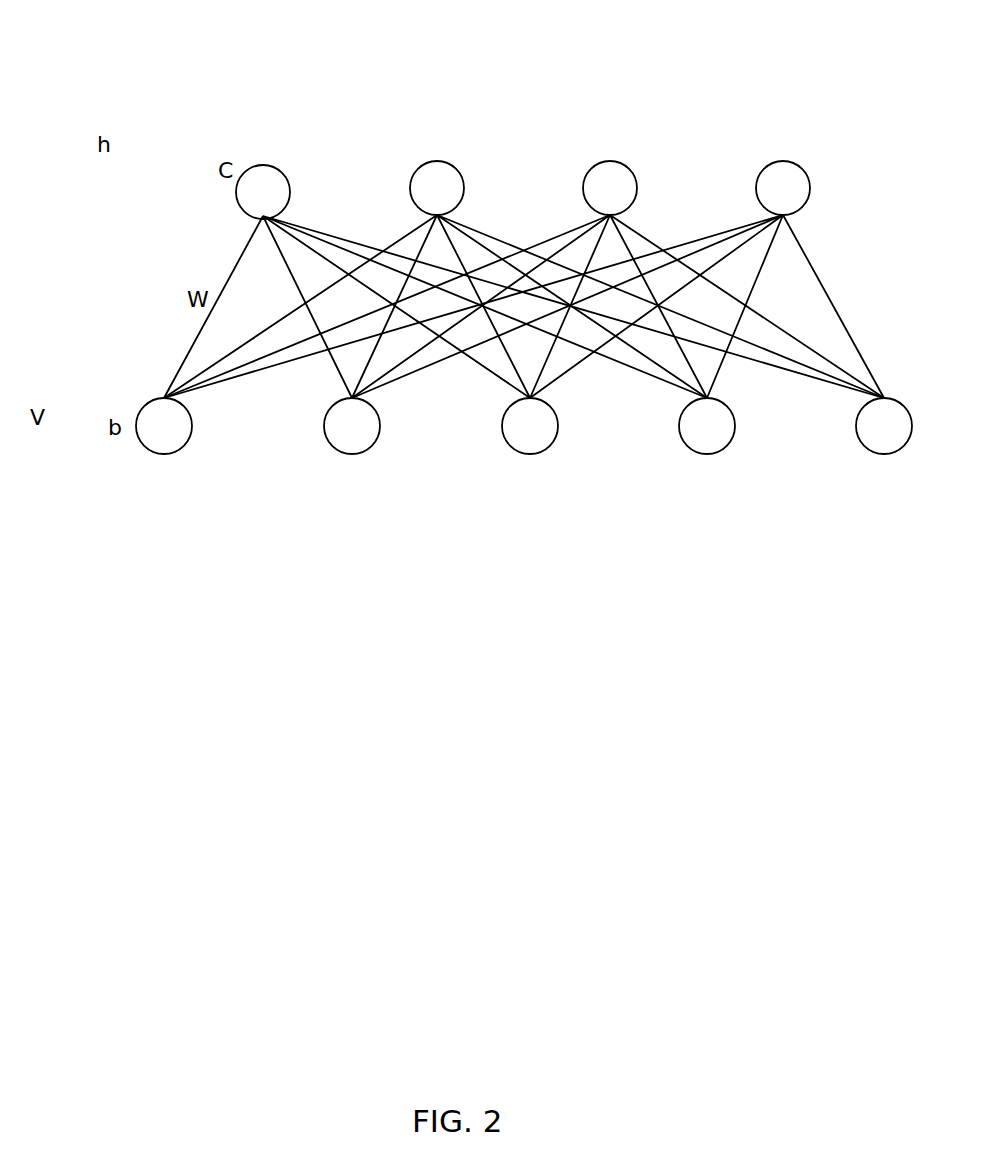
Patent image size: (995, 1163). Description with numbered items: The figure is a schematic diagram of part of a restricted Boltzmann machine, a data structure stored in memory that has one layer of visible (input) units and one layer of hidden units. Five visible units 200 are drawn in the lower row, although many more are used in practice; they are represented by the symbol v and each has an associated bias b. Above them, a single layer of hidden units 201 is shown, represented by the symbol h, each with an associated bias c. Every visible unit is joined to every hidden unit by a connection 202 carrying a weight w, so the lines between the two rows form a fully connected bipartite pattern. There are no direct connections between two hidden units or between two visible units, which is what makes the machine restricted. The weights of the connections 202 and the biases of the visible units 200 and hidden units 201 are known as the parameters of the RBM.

The visible units 200 is at (523, 453).
The hidden units 201 is at (780, 160).
The connection 202 is at (363, 365).